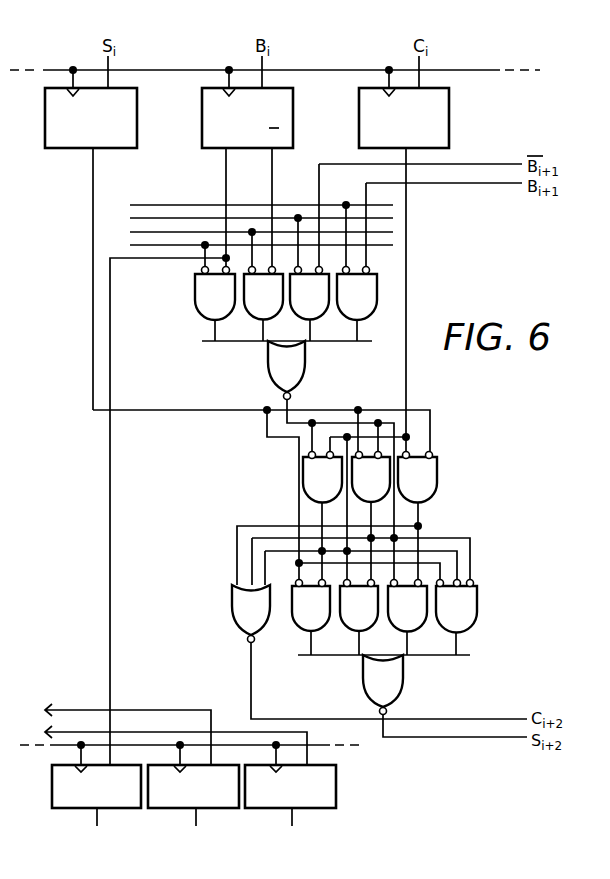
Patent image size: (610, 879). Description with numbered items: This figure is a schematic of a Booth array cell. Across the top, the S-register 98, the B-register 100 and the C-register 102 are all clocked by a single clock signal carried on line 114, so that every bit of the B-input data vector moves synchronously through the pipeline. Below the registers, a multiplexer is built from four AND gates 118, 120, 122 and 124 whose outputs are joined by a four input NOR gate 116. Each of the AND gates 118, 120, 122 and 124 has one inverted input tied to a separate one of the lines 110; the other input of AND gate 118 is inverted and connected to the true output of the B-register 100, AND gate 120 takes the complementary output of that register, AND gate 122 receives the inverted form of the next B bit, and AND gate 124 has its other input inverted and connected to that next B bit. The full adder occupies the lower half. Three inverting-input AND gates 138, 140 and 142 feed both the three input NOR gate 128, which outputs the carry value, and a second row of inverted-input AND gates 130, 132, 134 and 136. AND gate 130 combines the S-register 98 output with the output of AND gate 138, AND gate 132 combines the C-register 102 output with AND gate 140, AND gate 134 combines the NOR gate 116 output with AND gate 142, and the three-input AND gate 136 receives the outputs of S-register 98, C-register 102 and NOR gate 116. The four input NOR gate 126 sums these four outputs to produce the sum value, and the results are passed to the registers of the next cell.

The S-register 98 is at (137, 102).
The B-register 100 is at (293, 102).
The C-register 102 is at (449, 110).
The lines 110 is at (143, 181).
The line 114 is at (455, 69).
The four input NOR gate 116 is at (298, 370).
The AND gate 118 is at (195, 285).
The AND gate 120 is at (260, 308).
The AND gate 122 is at (318, 308).
The AND gate 124 is at (370, 292).
The four input NOR gate 126 is at (399, 685).
The three input NOR gate 128 is at (240, 597).
The AND gate 130 is at (300, 628).
The AND gate 132 is at (355, 628).
The AND gate 134 is at (410, 628).
The AND gate 136 is at (468, 630).
The AND gate 138 is at (303, 470).
The AND gate 140 is at (378, 495).
The AND gate 142 is at (437, 465).